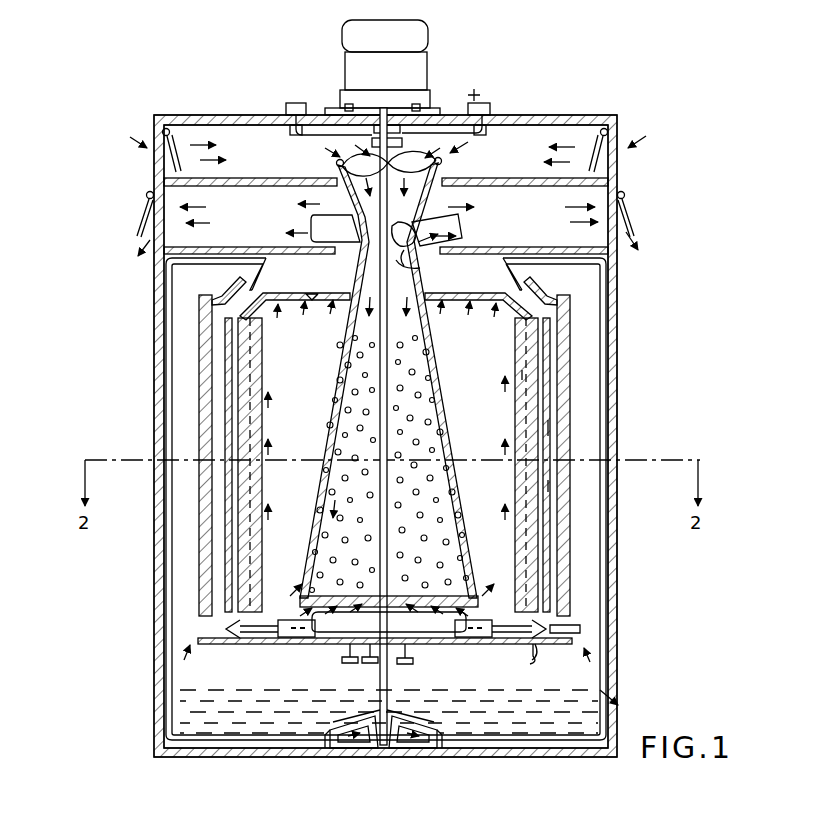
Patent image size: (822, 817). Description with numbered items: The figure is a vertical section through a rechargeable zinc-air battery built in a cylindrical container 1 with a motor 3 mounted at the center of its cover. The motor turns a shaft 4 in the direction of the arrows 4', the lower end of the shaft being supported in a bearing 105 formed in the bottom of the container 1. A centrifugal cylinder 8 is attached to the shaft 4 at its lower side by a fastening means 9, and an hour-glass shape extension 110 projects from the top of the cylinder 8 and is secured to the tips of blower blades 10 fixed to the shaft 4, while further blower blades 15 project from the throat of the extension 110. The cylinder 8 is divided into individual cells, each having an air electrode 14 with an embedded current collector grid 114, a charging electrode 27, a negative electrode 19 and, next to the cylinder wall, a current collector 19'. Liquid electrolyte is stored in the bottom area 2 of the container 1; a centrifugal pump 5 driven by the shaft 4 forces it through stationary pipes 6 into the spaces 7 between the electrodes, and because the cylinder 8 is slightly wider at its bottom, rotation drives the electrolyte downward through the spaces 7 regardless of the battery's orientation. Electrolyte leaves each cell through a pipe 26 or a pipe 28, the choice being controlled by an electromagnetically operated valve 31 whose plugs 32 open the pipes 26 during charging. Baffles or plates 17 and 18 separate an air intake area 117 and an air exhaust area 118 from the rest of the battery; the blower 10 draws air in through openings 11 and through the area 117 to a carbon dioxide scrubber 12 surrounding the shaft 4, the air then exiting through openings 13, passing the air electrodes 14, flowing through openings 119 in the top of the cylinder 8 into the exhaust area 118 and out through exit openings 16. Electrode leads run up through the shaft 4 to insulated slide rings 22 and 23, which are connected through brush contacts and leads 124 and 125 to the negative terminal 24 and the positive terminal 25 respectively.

The cylindrical container 1 is at (578, 116).
The bottom area 2 is at (200, 722).
The motor 3 is at (424, 38).
The shaft 4 is at (395, 385).
The arrows 4' is at (432, 267).
The centrifugal pump 5 is at (362, 742).
The pipes 6 is at (604, 290).
The spaces between the electrodes 7 is at (546, 442).
The centrifugal cylinder 8 is at (198, 326).
The fastening means 9 is at (392, 648).
The blower blades 10 is at (336, 164).
The openings 11 is at (150, 165).
The carbon dioxide scrubber 12 is at (452, 548).
The openings 13 is at (420, 612).
The air electrode 14 is at (240, 548).
The blower blades 15 is at (312, 222).
The exit openings 16 is at (148, 206).
The baffle 17 is at (517, 178).
The baffle 18 is at (578, 232).
The negative electrode 19 is at (445, 322).
The current collector 19' is at (383, 465).
The slide ring 22 is at (374, 140).
The slide ring 23 is at (385, 124).
The negative terminal 24 is at (290, 108).
The positive terminal 25 is at (486, 104).
The pipe 26 is at (198, 630).
The charging electrode 27 is at (548, 482).
The pipe 28 is at (534, 650).
The electromagnetically operated valve 31 is at (286, 638).
The plugs 32 is at (540, 636).
The bearing 105 is at (392, 748).
The hour-glass shape extension 110 is at (460, 212).
The current collector grid 114 is at (522, 374).
The air intake area 117 is at (188, 135).
The air exhaust area 118 is at (572, 198).
The openings 119 is at (336, 293).
The lead 124 is at (318, 128).
The lead 125 is at (448, 130).